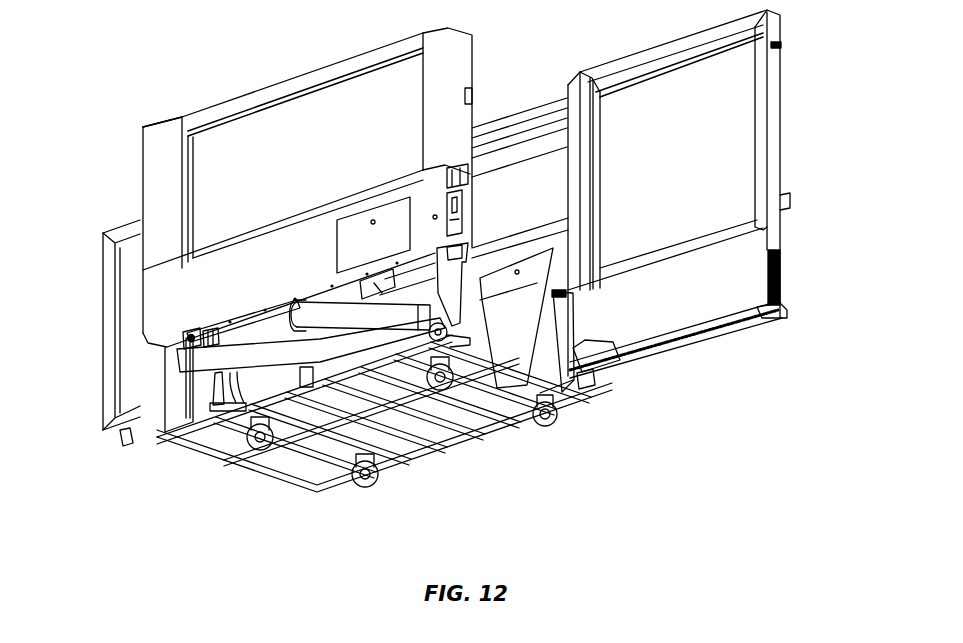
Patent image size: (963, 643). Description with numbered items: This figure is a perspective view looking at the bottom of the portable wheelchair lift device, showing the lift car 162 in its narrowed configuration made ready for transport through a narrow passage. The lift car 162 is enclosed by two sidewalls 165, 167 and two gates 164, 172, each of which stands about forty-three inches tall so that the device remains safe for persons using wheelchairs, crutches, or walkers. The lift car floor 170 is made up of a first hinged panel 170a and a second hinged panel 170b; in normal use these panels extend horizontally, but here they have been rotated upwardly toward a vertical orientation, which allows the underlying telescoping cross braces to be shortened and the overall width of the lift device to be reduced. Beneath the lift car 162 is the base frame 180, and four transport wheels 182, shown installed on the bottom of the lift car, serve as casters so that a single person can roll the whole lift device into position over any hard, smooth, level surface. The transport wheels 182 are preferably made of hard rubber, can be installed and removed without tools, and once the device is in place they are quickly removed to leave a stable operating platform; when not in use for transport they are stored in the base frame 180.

The lift car 162 is at (162, 98).
The gate 164 is at (770, 160).
The sidewall 165 is at (563, 108).
The sidewall 167 is at (364, 54).
The lift car floor 170 is at (622, 346).
The first hinged panel 170a is at (527, 333).
The second hinged panel 170b is at (552, 320).
The gate 172 is at (103, 352).
The base frame 180 is at (460, 448).
The transport wheels 182 is at (363, 490).